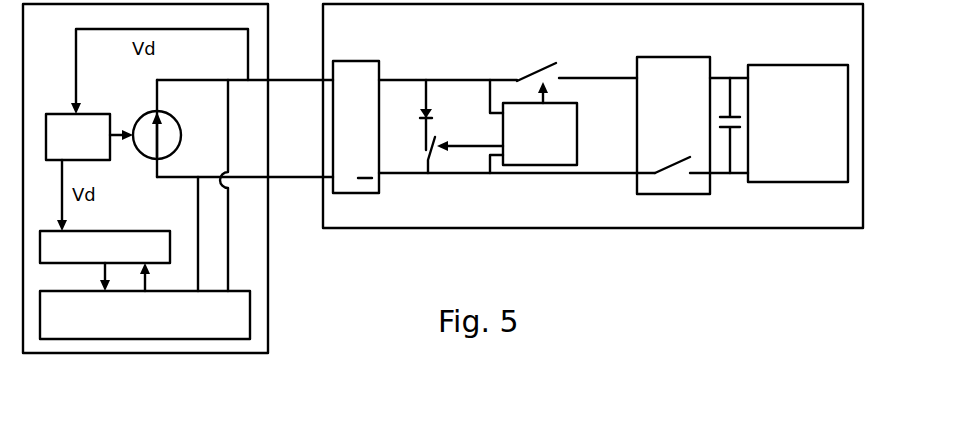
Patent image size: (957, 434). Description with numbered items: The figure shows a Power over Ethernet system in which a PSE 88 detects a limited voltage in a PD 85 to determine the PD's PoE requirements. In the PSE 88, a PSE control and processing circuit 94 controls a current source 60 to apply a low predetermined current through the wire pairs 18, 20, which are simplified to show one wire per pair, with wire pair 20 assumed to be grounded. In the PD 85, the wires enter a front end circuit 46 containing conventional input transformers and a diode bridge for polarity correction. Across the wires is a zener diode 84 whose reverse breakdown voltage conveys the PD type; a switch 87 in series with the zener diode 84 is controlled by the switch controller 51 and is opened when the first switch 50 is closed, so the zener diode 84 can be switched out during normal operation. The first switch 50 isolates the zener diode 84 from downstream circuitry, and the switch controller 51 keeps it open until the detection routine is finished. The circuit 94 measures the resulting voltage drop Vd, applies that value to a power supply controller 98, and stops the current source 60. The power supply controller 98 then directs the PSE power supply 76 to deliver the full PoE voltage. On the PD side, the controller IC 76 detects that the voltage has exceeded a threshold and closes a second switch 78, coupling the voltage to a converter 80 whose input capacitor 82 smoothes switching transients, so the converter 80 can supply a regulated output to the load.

The wire pair 18 is at (292, 86).
The wire pair 20 is at (292, 176).
The front end circuit 46 is at (353, 60).
The first switch 50 is at (527, 63).
The switch controller 51 is at (507, 123).
The current source 60 is at (178, 137).
The PSE power supply / PD controller IC 76 is at (130, 339).
The second switch 78 is at (677, 180).
The converter 80 is at (800, 65).
The input capacitor 82 is at (742, 100).
The zener diode 84 is at (438, 120).
The PD 85 is at (593, 116).
The switch 87 is at (428, 157).
The PSE 88 is at (270, 303).
The PSE control and processing circuit 94 is at (78, 137).
The power supply controller 98 is at (105, 230).